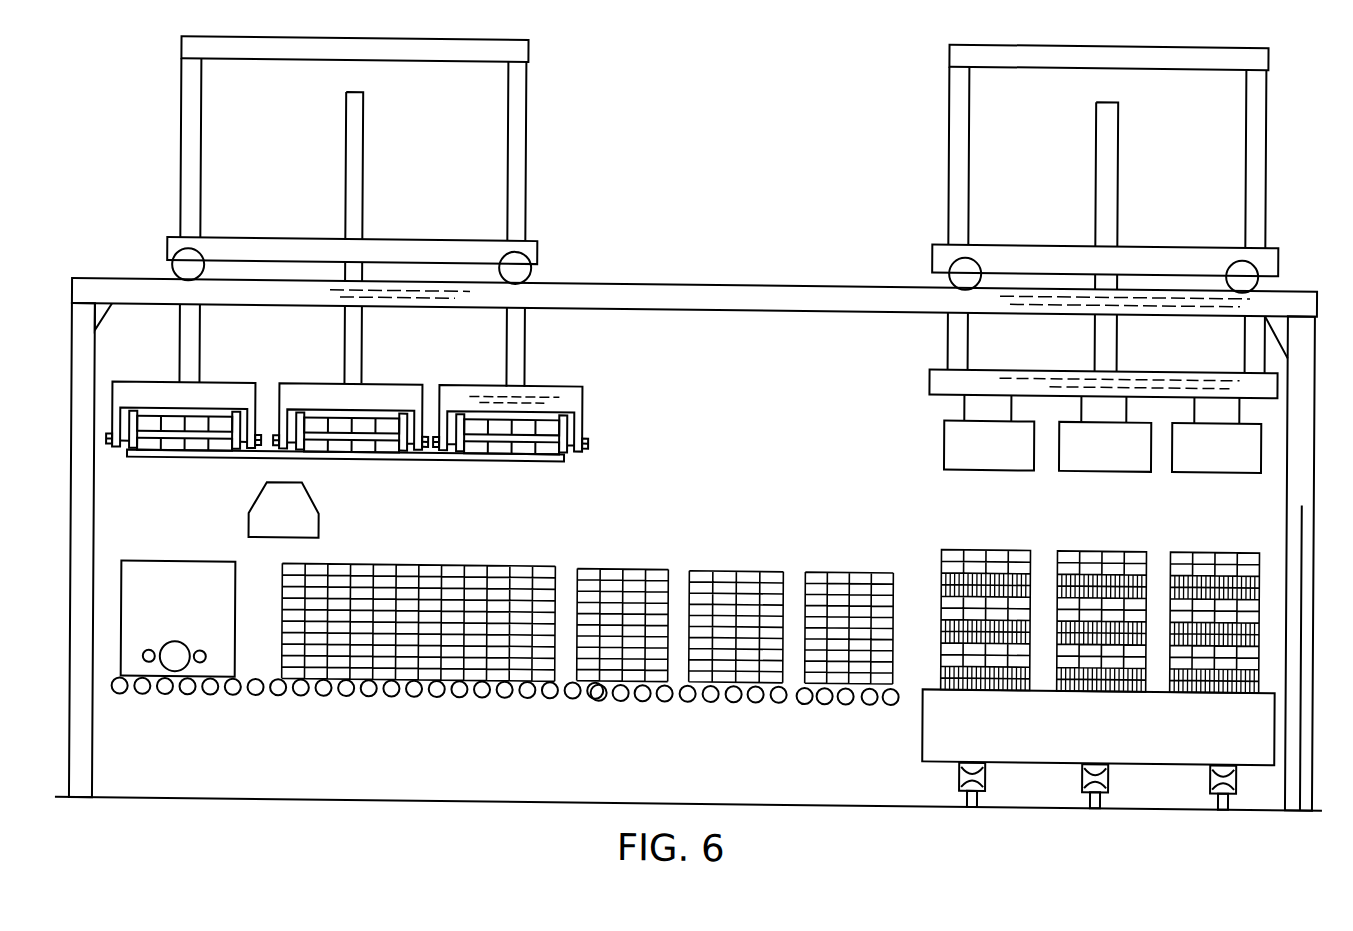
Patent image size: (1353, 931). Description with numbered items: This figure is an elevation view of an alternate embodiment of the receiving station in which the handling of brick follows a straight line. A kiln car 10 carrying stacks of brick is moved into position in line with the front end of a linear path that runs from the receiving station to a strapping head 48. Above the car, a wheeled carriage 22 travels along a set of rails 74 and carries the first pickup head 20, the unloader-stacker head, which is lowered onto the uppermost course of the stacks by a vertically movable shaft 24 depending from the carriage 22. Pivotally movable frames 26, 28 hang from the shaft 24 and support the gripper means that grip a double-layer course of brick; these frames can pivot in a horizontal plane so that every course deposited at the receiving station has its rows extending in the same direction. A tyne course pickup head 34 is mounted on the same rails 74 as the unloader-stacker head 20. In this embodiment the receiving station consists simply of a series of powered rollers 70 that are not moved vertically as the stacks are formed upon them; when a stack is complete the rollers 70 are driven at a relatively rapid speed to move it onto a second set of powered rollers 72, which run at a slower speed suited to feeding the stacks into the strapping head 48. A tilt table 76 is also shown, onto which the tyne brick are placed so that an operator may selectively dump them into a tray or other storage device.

The kiln car 10 is at (1096, 725).
The first pickup head 20 is at (937, 373).
The wheeled carriage 22 is at (1268, 254).
The vertically movable shaft 24 is at (1107, 141).
The pivotally movable frame 26 is at (1098, 451).
The pivotally movable frame 28 is at (978, 449).
The tyne course pickup head 34 is at (212, 392).
The strapping head 48 is at (310, 524).
The powered rollers 70 is at (733, 694).
The second set of powered rollers 72 is at (464, 688).
The rails 74 is at (765, 290).
The tilt table 76 is at (505, 453).